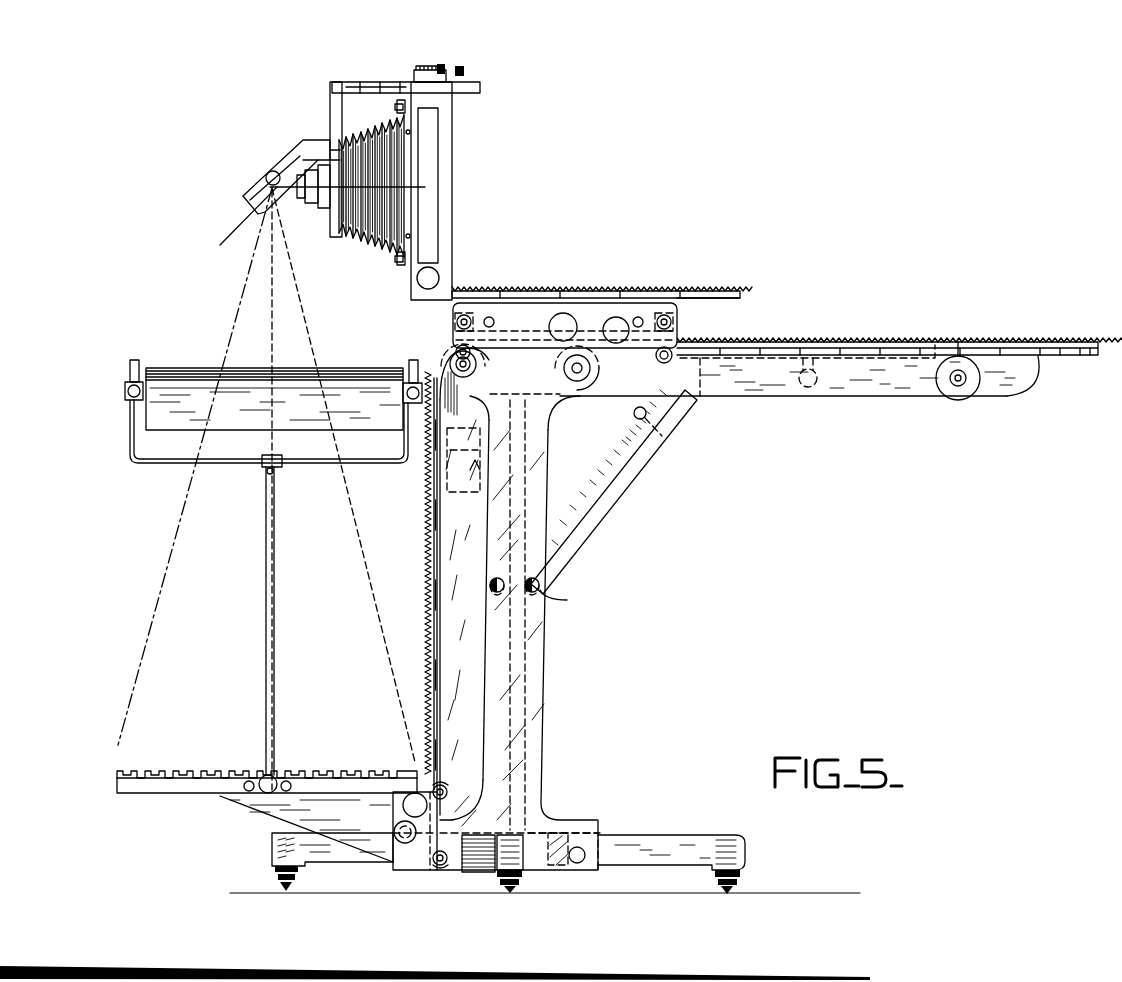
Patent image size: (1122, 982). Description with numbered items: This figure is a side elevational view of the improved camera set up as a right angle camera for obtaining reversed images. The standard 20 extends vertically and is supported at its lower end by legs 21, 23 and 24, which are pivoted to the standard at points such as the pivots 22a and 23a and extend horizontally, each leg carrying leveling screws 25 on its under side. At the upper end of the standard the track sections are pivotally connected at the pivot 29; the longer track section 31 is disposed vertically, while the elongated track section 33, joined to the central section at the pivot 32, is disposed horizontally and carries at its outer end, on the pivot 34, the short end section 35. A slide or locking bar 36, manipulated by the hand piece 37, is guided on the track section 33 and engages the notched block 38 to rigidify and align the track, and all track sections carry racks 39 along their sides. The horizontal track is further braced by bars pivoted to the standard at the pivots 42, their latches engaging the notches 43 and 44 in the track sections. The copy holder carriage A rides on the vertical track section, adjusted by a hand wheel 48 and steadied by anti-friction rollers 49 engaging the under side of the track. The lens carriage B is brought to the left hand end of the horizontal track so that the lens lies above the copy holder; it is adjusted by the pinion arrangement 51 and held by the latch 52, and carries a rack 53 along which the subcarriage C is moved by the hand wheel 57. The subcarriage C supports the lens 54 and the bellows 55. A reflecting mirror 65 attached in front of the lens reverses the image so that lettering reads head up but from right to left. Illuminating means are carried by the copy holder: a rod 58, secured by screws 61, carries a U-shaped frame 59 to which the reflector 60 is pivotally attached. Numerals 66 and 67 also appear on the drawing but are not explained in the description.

The copy holder carriage A is at (425, 178).
The lens carriage B is at (530, 318).
The subcarriage C is at (444, 218).
The standard 20 is at (548, 635).
The leg 21 is at (683, 846).
The pivot 22a is at (487, 833).
The leg 23 is at (274, 849).
The pivot 23a is at (583, 848).
The leg 24 is at (528, 870).
The leveling screws 25 is at (274, 878).
The pivot 29 is at (449, 360).
The track section 31 is at (464, 608).
The pivot 32 is at (578, 372).
The track section 33 is at (862, 397).
The pivot 34 is at (952, 382).
The end section 35 is at (995, 395).
The locking bar 36 is at (848, 346).
The hand piece 37 is at (813, 388).
The notched block 38 is at (463, 451).
The racks 39 is at (912, 342).
The pivots 42 is at (534, 595).
The notch 43 is at (470, 485).
The notch 44 is at (700, 398).
The hand wheel 48 is at (410, 795).
The anti-friction rollers 49 is at (395, 830).
The pinion arrangement 51 is at (563, 327).
The latch 52 is at (616, 330).
The rack 53 is at (715, 291).
The lens 54 is at (311, 206).
The bellows 55 is at (370, 240).
The hand wheel 57 is at (427, 290).
The rod 58 is at (275, 500).
The U-shaped frame 59 is at (212, 460).
The reflector 60 is at (273, 388).
The screws 61 is at (267, 767).
The reflecting mirror 65 is at (262, 192).
The rack 66 is at (1062, 356).
The guide 67 is at (720, 300).